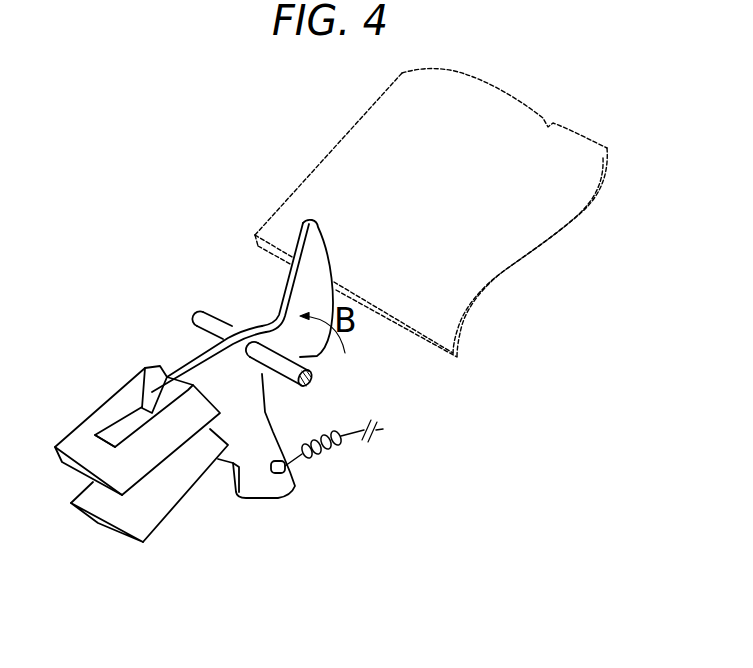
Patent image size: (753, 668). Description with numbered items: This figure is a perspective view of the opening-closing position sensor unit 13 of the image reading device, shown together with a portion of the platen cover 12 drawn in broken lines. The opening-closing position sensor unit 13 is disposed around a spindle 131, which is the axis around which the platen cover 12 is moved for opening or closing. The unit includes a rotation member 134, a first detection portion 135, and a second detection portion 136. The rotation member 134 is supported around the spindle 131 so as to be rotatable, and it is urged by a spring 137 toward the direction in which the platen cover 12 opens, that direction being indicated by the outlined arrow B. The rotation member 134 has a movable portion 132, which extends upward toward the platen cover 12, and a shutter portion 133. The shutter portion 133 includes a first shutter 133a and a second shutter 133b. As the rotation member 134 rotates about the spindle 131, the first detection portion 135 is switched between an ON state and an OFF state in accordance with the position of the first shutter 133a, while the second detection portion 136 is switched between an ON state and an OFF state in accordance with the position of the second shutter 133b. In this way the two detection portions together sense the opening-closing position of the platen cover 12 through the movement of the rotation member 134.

The platen cover 12 is at (540, 138).
The opening-closing position sensor unit 13 is at (231, 365).
The spindle 131 is at (318, 383).
The movable portion 132 is at (305, 216).
The shutter portion 133 is at (259, 438).
The first shutter 133a is at (155, 378).
The second shutter 133b is at (263, 488).
The rotation member 134 is at (190, 348).
The first detection portion 135 is at (98, 406).
The second detection portion 136 is at (112, 535).
The spring 137 is at (327, 457).